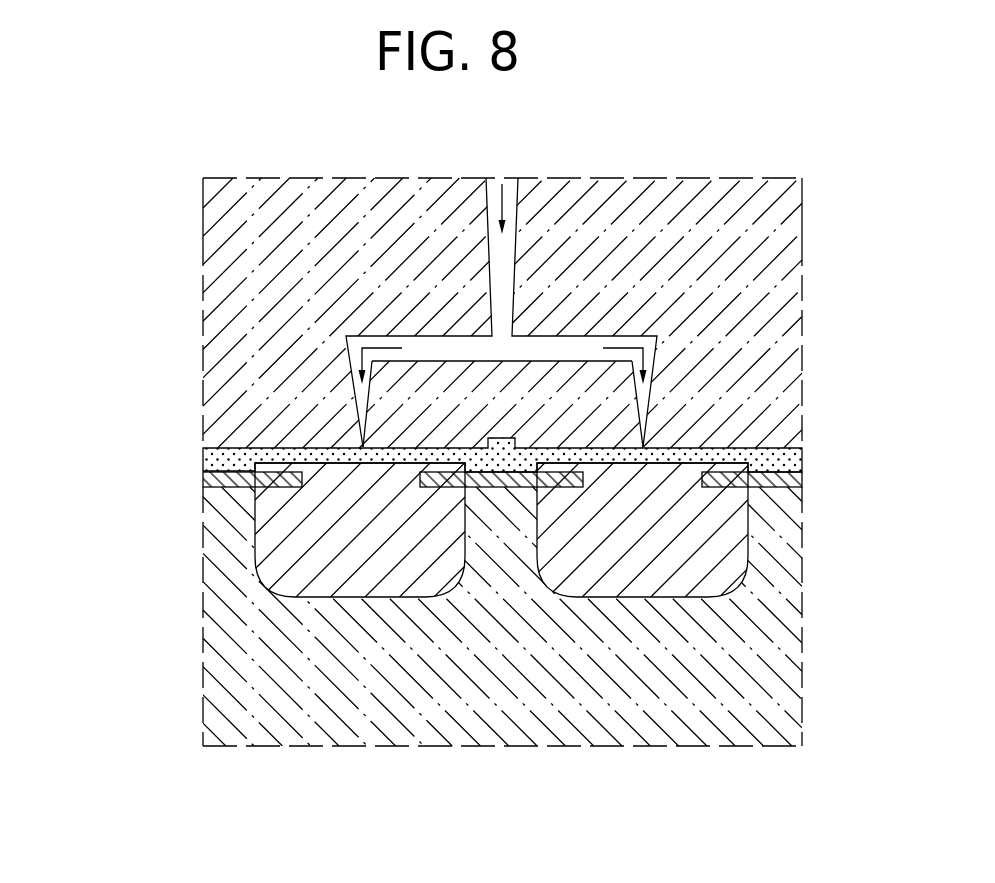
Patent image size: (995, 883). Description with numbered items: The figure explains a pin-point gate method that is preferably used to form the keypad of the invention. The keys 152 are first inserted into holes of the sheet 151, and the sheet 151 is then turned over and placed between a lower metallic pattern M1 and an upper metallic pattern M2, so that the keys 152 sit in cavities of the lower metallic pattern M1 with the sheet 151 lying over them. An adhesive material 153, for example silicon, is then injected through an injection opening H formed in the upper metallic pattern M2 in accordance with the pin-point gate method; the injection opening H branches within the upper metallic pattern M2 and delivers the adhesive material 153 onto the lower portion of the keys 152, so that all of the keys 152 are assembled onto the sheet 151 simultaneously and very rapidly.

The adhesive material 153 is at (223, 460).
The sheet 151 is at (237, 482).
The keys 152 is at (312, 564).
The lower metallic pattern M1 is at (777, 540).
The upper metallic pattern M2 is at (780, 297).
The injection opening H is at (652, 356).